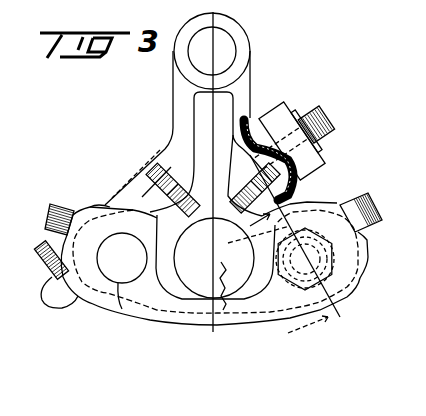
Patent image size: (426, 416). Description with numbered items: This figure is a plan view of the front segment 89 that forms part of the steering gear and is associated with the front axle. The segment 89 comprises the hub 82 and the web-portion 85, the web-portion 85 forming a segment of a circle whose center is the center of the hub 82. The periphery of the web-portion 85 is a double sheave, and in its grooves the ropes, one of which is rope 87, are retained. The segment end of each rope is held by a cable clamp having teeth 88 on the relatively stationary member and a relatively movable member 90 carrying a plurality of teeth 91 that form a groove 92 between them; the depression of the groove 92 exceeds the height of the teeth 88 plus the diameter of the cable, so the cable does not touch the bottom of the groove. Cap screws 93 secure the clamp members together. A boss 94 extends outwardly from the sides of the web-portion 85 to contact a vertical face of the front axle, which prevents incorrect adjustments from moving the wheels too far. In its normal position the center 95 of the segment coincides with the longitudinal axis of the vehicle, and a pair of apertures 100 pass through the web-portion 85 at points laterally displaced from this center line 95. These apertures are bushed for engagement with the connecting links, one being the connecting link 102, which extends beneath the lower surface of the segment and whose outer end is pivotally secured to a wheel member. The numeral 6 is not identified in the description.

The angular offset 6 is at (284, 248).
The hub 82 is at (246, 42).
The web-portion 85 is at (140, 320).
The rope 87 is at (90, 274).
The teeth 88 is at (152, 168).
The segment 89 is at (173, 99).
The relatively movable member 90 is at (320, 170).
The teeth 91 is at (252, 125).
The groove 92 is at (286, 100).
The cap screws 93 is at (335, 127).
The boss 94 is at (48, 206).
The center 95 is at (211, 175).
The apertures 100 is at (118, 316).
The connecting link 102 is at (240, 250).